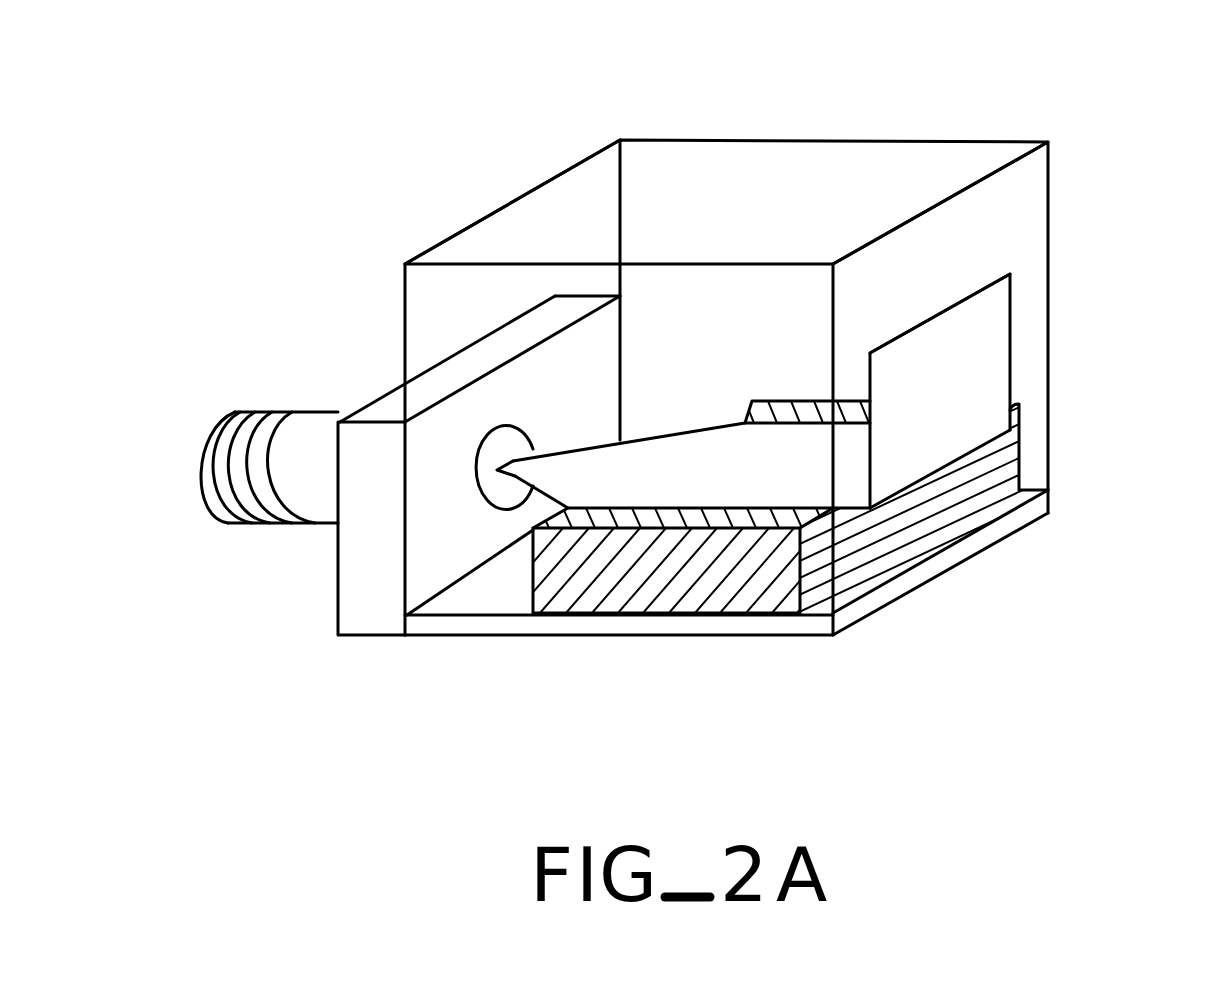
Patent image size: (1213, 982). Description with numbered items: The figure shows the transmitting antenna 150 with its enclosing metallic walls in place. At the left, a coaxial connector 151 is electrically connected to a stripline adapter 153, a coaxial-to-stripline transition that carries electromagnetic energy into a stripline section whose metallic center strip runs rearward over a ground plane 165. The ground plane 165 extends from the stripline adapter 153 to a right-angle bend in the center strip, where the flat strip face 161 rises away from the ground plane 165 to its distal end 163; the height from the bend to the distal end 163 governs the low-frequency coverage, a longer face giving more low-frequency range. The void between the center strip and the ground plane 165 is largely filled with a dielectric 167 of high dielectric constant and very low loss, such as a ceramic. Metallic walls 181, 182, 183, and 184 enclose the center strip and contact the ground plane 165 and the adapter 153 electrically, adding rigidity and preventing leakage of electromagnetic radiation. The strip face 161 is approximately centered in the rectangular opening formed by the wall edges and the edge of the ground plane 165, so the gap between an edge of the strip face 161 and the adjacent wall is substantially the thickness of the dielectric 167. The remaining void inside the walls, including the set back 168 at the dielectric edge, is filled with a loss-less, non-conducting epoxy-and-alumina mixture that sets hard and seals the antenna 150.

The transmitting antenna 150 is at (412, 668).
The coaxial connector 151 is at (243, 417).
The stripline adapter 153 is at (362, 592).
The flat strip face 161 is at (963, 385).
The distal end 163 is at (955, 311).
The ground plane 165 is at (670, 627).
The dielectric 167 is at (960, 500).
The set back 168 is at (887, 574).
The metallic wall 181 is at (750, 197).
The metallic wall 182 is at (995, 222).
The metallic wall 183 is at (702, 317).
The metallic wall 184 is at (520, 228).